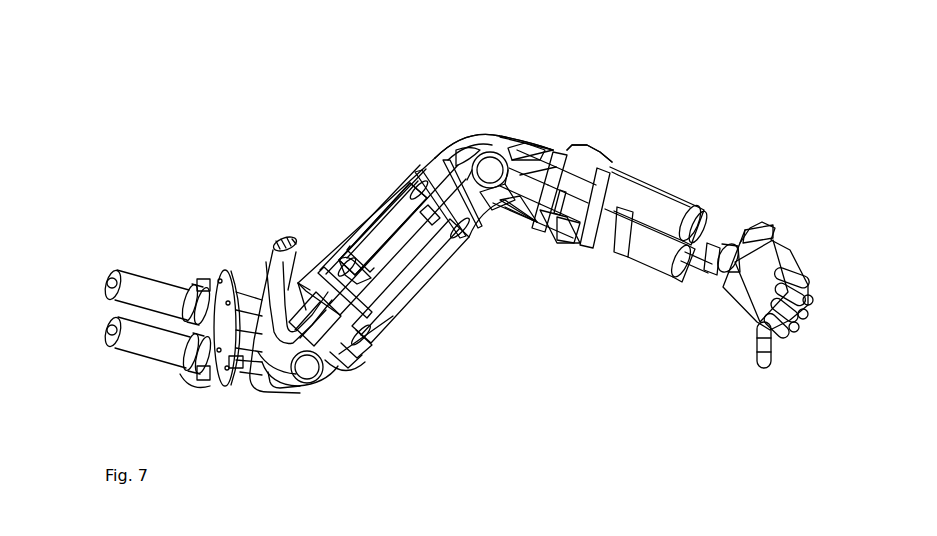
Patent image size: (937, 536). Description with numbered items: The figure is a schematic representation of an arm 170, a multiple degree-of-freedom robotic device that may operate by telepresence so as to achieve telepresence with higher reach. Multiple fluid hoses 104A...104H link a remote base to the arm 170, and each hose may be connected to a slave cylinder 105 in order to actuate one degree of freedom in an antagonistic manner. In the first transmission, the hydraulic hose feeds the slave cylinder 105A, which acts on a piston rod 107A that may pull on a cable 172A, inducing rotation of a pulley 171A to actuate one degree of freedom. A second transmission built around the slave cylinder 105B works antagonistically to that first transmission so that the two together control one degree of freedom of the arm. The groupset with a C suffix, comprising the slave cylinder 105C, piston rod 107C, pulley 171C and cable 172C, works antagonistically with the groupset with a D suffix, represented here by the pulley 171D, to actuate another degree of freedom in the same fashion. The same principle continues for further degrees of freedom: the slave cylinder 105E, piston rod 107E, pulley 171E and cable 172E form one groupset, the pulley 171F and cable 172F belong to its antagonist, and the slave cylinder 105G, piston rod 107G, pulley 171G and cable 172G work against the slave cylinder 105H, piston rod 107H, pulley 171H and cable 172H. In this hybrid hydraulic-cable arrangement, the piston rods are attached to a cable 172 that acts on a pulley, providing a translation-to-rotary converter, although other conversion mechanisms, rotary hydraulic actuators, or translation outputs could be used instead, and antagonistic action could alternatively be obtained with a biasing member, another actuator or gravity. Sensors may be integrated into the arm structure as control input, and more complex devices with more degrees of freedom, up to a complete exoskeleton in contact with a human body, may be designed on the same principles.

The arm 170 is at (132, 157).
The fluid hoses 104A...104H is at (272, 228).
The slave cylinder 105 is at (383, 169).
The slave cylinder 105A is at (178, 352).
The slave cylinder 105B is at (140, 292).
The slave cylinder 105C is at (348, 267).
The slave cylinder 105E is at (390, 317).
The slave cylinder 105G is at (652, 195).
The slave cylinder 105H is at (650, 257).
The piston rod 107A is at (236, 368).
The piston rod 107C is at (363, 245).
The piston rod 107E is at (453, 237).
The piston rod 107G is at (580, 177).
The piston rod 107H is at (567, 228).
The pulley 171A is at (312, 380).
The pulley 171C is at (292, 322).
The pulley 171D is at (345, 358).
The pulley 171E is at (488, 152).
The pulley 171F is at (467, 147).
The pulley 171G is at (517, 140).
The pulley 171H is at (502, 205).
The cable 172 is at (352, 340).
The cable 172A is at (277, 377).
The cable 172C is at (313, 307).
The cable 172E is at (492, 195).
The cable 172F is at (449, 146).
The cable 172G is at (527, 152).
The cable 172H is at (547, 218).